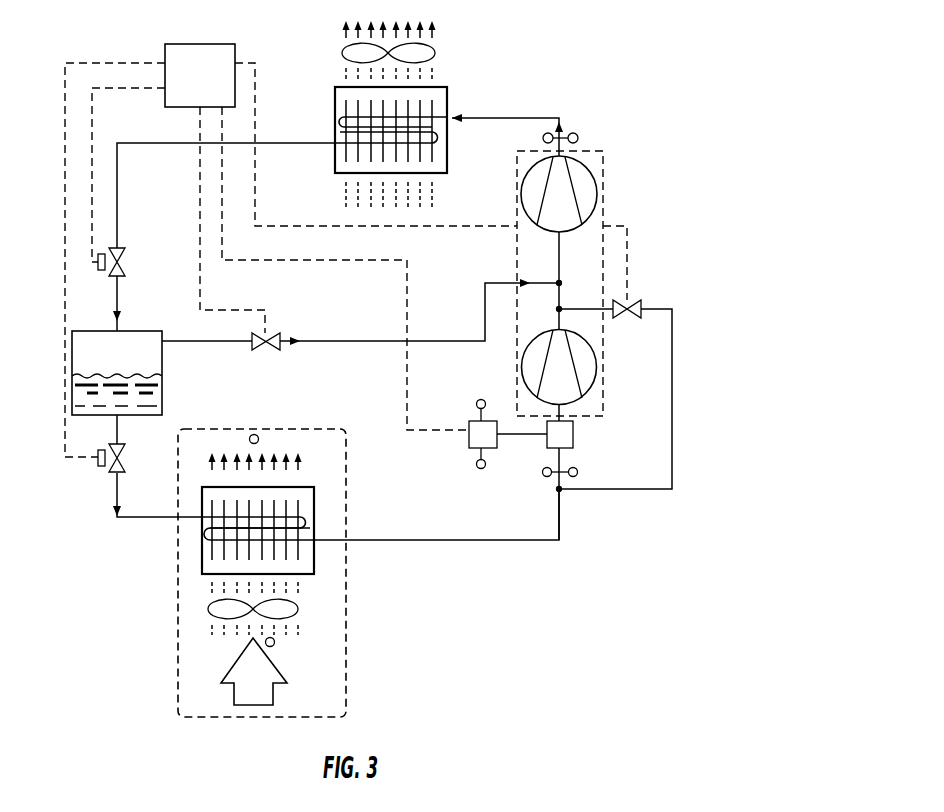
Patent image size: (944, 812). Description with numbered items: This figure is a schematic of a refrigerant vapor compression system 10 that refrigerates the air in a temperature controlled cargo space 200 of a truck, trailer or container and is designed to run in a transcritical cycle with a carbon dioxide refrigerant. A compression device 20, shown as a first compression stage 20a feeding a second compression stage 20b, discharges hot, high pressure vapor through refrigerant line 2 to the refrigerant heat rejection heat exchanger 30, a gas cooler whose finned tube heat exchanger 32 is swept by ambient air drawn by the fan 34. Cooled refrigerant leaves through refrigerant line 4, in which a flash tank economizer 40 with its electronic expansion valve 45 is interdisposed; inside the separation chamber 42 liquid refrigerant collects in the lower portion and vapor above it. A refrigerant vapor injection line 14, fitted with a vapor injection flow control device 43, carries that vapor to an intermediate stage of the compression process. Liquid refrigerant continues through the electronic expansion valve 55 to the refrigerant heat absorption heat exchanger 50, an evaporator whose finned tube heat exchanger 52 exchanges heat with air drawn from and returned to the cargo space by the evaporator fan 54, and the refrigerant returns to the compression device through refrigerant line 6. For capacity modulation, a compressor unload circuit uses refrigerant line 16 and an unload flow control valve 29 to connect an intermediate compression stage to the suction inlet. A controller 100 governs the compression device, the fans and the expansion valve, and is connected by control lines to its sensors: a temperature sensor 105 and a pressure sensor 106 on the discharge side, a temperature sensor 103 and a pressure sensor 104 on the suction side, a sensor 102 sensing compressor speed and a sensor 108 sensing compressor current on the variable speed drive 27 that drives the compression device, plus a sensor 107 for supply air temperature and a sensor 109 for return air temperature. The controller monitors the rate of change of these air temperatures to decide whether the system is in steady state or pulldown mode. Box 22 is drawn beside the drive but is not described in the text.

The controller 100 is at (205, 44).
The fan 34 is at (435, 52).
The refrigerant heat rejection heat exchanger 30 is at (447, 98).
The finned tube heat exchanger 32 is at (437, 138).
The refrigerant line 4 is at (305, 143).
The refrigerant line 2 is at (520, 118).
The refrigerant vapor compression system 10 is at (562, 88).
The temperature sensor 105 is at (534, 135).
The pressure sensor 106 is at (578, 136).
The compression device 20 is at (565, 280).
The second compression stage 20b is at (603, 210).
The first compression stage 20a is at (596, 385).
The electronic expansion valve 45 is at (125, 262).
The flash tank economizer 40 is at (94, 373).
The separation chamber 42 is at (127, 363).
The refrigerant vapor injection line 14 is at (195, 342).
The vapor injection flow control device 43 is at (275, 349).
The unload flow control valve 29 is at (630, 300).
The refrigerant line 16 is at (672, 385).
The variable speed drive 27 is at (469, 441).
The reversing valve 22 is at (573, 434).
The sensor 102 is at (477, 403).
The sensor 108 is at (480, 468).
The temperature sensor 103 is at (542, 472).
The pressure sensor 104 is at (578, 472).
The electronic expansion valve 55 is at (125, 458).
The sensor 107 is at (258, 439).
The refrigerant heat absorption heat exchanger 50 is at (314, 562).
The finned tube heat exchanger 52 is at (300, 514).
The evaporator fan 54 is at (298, 608).
The sensor 109 is at (275, 642).
The temperature controlled cargo space 200 is at (346, 668).
The refrigerant line 6 is at (418, 541).